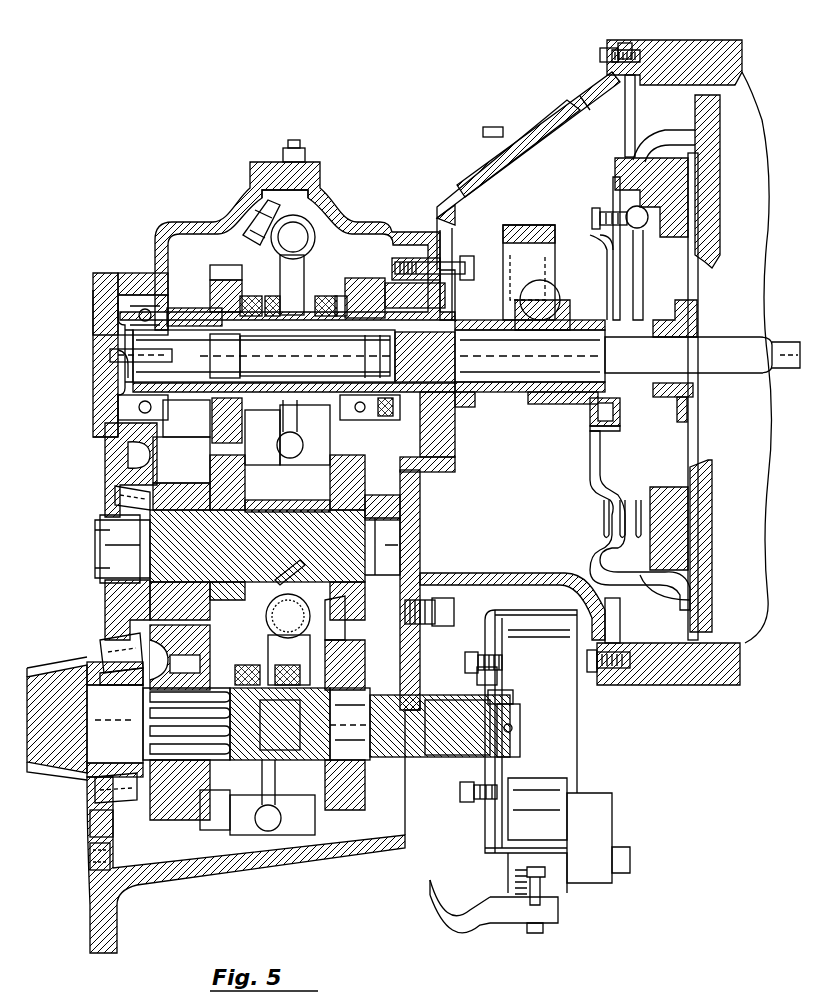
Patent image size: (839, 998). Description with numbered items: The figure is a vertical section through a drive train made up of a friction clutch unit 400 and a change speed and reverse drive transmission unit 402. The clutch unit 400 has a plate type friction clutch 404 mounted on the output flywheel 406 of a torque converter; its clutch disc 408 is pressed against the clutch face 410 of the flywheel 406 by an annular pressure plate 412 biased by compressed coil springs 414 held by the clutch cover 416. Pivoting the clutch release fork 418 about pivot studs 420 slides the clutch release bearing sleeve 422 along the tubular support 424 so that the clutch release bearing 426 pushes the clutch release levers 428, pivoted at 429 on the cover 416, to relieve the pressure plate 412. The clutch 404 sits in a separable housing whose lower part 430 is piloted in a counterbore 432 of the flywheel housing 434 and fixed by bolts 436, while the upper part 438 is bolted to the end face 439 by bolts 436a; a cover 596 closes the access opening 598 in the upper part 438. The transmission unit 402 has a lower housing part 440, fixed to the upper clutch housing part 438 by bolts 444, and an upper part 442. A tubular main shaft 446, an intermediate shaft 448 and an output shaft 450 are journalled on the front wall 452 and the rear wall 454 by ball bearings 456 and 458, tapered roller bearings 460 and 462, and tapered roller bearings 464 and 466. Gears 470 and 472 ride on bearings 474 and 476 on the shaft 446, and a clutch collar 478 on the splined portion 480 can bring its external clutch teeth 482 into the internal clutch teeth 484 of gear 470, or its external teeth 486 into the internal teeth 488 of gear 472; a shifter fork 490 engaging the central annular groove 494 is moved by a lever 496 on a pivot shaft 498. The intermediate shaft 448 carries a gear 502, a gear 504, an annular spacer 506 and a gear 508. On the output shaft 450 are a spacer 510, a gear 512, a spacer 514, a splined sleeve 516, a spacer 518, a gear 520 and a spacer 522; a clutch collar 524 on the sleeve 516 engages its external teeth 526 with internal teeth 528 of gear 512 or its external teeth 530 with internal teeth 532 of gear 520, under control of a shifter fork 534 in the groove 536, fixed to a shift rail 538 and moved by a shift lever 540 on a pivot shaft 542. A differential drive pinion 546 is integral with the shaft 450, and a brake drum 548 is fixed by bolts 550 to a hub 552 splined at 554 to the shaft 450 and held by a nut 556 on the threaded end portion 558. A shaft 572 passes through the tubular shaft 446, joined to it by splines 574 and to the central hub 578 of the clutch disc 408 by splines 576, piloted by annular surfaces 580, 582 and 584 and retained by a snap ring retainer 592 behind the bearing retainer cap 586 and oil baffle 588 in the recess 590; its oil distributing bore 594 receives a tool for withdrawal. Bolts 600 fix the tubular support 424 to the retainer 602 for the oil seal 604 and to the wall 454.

The friction clutch unit 400 is at (568, 87).
The change speed and reverse drive transmission unit 402 is at (237, 160).
The plate type friction clutch 404 is at (591, 182).
The output flywheel 406 is at (722, 208).
The clutch disc 408 is at (700, 285).
The clutch face 410 is at (700, 145).
The annular pressure plate 412 is at (692, 514).
The compressed coil springs 414 is at (627, 500).
The clutch cover 416 is at (588, 514).
The clutch release fork 418 is at (532, 214).
The pivot studs 420 is at (550, 296).
The clutch release bearing sleeve 422 is at (553, 405).
The tubular support 424 is at (490, 392).
The clutch release bearing 426 is at (595, 432).
The clutch release levers 428 is at (655, 256).
The pivot 429 is at (600, 245).
The lower clutch housing part 430 is at (482, 570).
The counterbore 432 is at (636, 110).
The flywheel housing 434 is at (705, 44).
The bolts 436 is at (590, 672).
The bolts 436a is at (600, 48).
The upper clutch housing part 438 is at (452, 224).
The end face 439 is at (628, 42).
The transmission housing lower part 440 is at (268, 848).
The transmission housing upper part 442 is at (330, 188).
The bolts 444 is at (456, 611).
The tubular main shaft 446 is at (141, 347).
The intermediate shaft 448 is at (358, 544).
The output shaft 450 is at (158, 724).
The front wall 452 is at (108, 451).
The rear wall 454 is at (445, 470).
The ball type antifriction bearing 456 is at (142, 278).
The ball type antifriction bearing 458 is at (415, 275).
The tapered roller bearing 460 is at (116, 496).
The tapered roller bearing 462 is at (425, 504).
The tapered roller bearing 464 is at (102, 656).
The tapered roller bearing 466 is at (440, 726).
The gear 470 is at (220, 268).
The gear 472 is at (362, 280).
The bearing 474 is at (227, 420).
The bearing 476 is at (355, 305).
The clutch collar 478 is at (330, 367).
The central splined portion 480 is at (290, 354).
The external clutch teeth 482 is at (271, 298).
The internal clutch teeth 484 is at (263, 437).
The external clutch teeth 486 is at (292, 285).
The internal clutch teeth 488 is at (330, 298).
The shifter fork 490 is at (290, 458).
The central annular groove 494 is at (307, 435).
The lever 496 is at (318, 258).
The pivot shaft 498 is at (300, 232).
The gear 502 is at (180, 480).
The gear 504 is at (240, 478).
The annular spacer 506 is at (300, 504).
The gear 508 is at (335, 490).
The spacer 510 is at (115, 719).
The gear 512 is at (180, 657).
The spacer 514 is at (143, 785).
The externally and internally splined sleeve 516 is at (280, 724).
The spacer 518 is at (368, 742).
The gear 520 is at (345, 665).
The spacer 522 is at (350, 724).
The clutch collar 524 is at (280, 725).
The external clutch teeth 526 is at (255, 663).
The internal clutch teeth 528 is at (183, 667).
The external clutch teeth 530 is at (298, 663).
The internal clutch teeth 532 is at (345, 785).
The shifter fork 534 is at (245, 818).
The central external annular groove 536 is at (286, 666).
The shift rail 538 is at (210, 806).
The shift lever 540 is at (328, 618).
The pivot shaft 542 is at (288, 616).
The differential drive pinion 546 is at (50, 780).
The brake drum 548 is at (577, 747).
The bolts 550 is at (502, 660).
The hub 552 is at (498, 678).
The mating splines 554 is at (457, 727).
The nut 556 is at (513, 696).
The reduced diameter threaded end portion 558 is at (520, 722).
The shaft 572 is at (478, 328).
The axially extending splines 574 is at (425, 357).
The external axially extending splines 576 is at (632, 418).
The central hub 578 is at (695, 326).
The annular piloting surface 580 is at (359, 358).
The annular piloting surface 582 is at (370, 407).
The annular piloting surface 584 is at (180, 308).
The bearing retainer cap 586 is at (98, 310).
The oil baffle 588 is at (116, 328).
The recess 590 is at (120, 282).
The snap ring retainer 592 is at (118, 376).
The oil distributing bore 594 is at (164, 417).
The cover 596 is at (500, 133).
The access opening 598 is at (470, 200).
The bolts 600 is at (478, 260).
The retainer 602 is at (458, 450).
The oil seal 604 is at (465, 408).